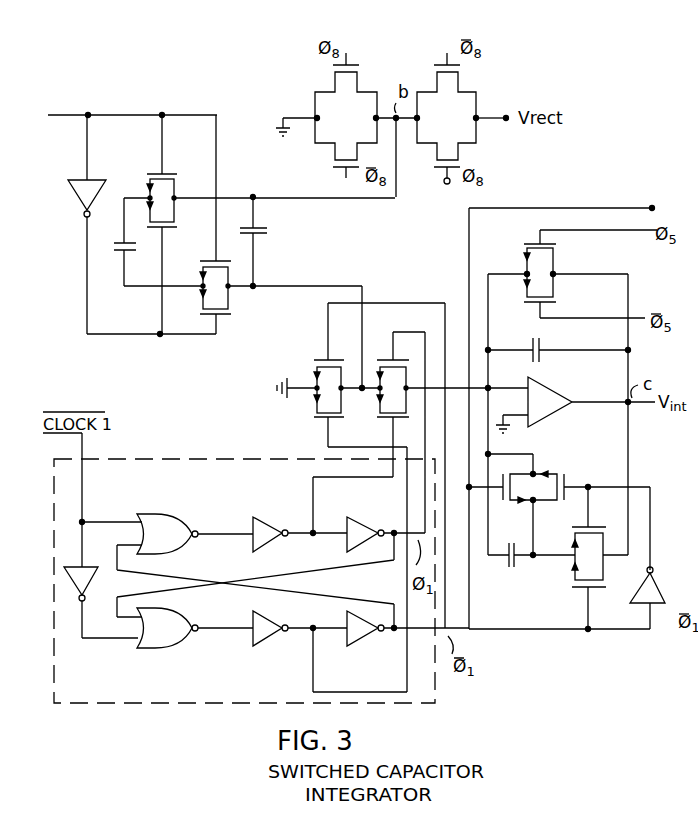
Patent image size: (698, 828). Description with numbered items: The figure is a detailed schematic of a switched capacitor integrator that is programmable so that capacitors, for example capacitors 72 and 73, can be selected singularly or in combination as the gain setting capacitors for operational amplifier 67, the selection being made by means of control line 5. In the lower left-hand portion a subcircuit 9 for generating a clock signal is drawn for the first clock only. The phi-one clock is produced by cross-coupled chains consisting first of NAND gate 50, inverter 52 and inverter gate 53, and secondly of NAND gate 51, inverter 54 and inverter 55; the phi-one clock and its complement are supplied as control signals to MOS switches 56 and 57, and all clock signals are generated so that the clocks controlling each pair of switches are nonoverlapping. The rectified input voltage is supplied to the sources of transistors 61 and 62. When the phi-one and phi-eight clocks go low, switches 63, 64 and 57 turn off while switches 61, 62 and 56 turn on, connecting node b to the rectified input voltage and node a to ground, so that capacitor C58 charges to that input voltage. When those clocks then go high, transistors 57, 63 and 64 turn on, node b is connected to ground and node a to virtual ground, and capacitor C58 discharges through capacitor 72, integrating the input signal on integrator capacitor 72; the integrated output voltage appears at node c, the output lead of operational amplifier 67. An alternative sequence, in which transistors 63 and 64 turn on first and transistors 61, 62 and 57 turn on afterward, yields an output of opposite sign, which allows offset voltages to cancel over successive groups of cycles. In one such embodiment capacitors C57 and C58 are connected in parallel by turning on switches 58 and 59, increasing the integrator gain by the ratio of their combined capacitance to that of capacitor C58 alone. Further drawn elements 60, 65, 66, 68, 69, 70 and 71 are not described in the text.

The control line 5 is at (570, 209).
The subcircuit 9 is at (244, 581).
The NAND gate 50 is at (190, 500).
The NAND gate 51 is at (172, 645).
The inverter 52 is at (283, 503).
The inverter gate 53 is at (383, 503).
The inverter 54 is at (268, 638).
The inverter 55 is at (363, 638).
The MOS switch 56 is at (322, 352).
The MOS switch 57 is at (420, 355).
The switch 58 is at (244, 300).
The switch 59 is at (140, 188).
The inverter 60 is at (68, 192).
The transistor 61 is at (470, 74).
The transistor 62 is at (424, 160).
The switch 63 is at (319, 74).
The switch 64 is at (323, 158).
The transistor 65 is at (523, 238).
The transistor 66 is at (514, 299).
The operational amplifier 67 is at (548, 386).
The transistor 68 is at (548, 450).
The transistor 69 is at (525, 511).
The transistor 70 is at (564, 538).
The transistor 71 is at (561, 575).
The capacitor 72 is at (543, 346).
The capacitor 73 is at (512, 570).
The capacitor C57 is at (113, 240).
The capacitor C58 is at (288, 232).